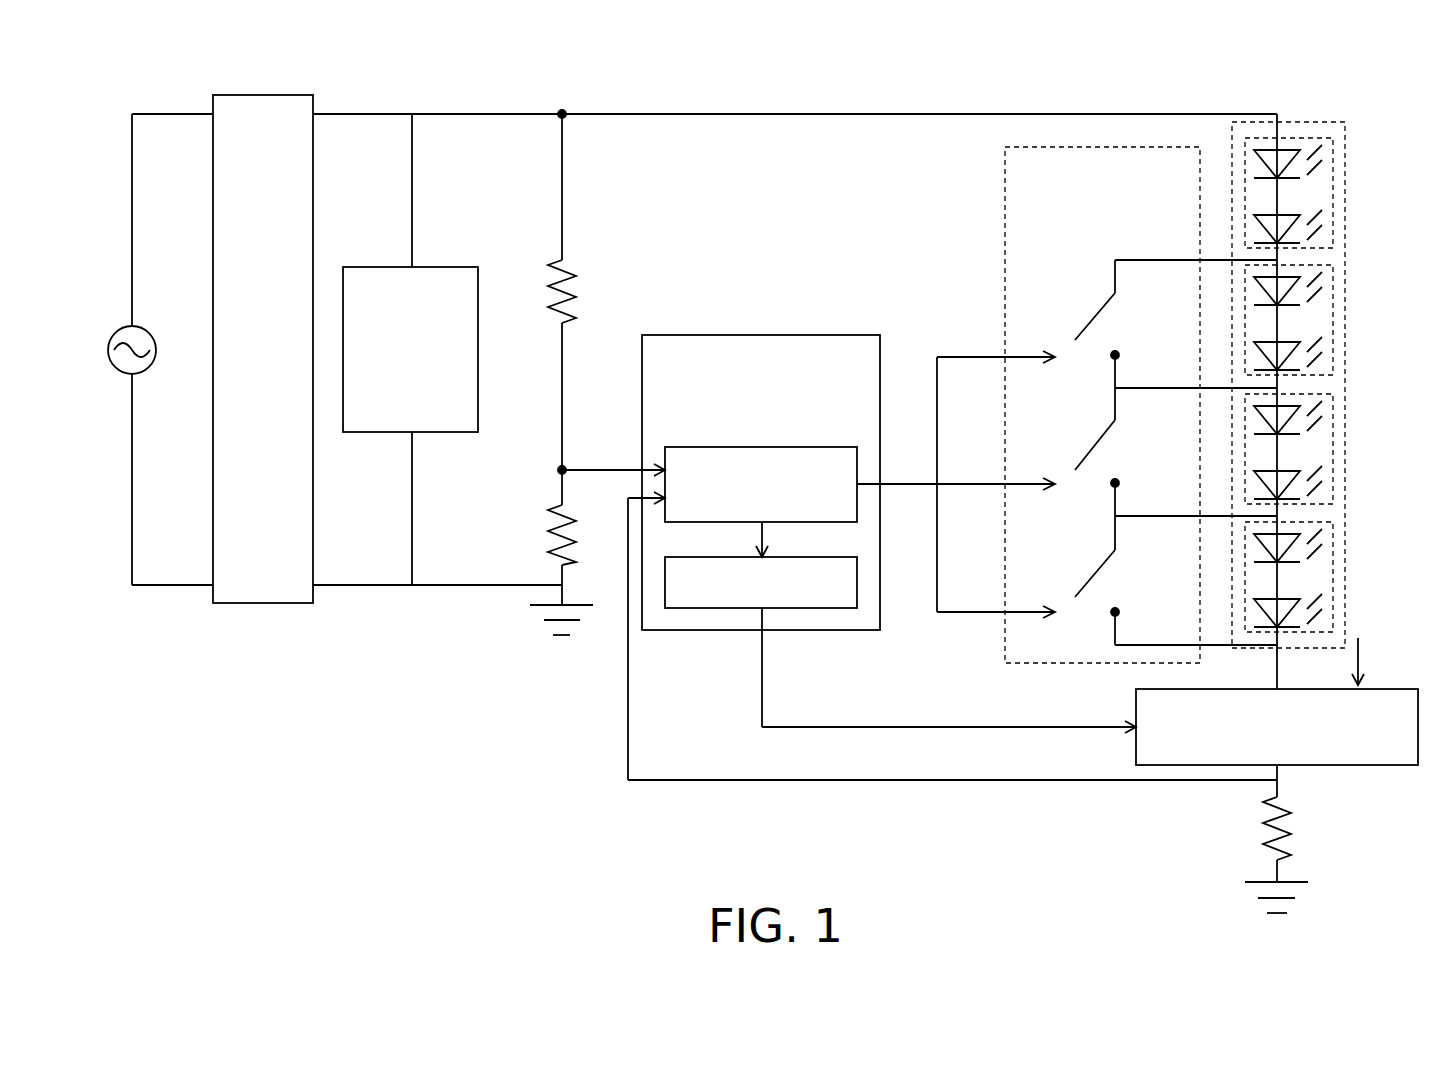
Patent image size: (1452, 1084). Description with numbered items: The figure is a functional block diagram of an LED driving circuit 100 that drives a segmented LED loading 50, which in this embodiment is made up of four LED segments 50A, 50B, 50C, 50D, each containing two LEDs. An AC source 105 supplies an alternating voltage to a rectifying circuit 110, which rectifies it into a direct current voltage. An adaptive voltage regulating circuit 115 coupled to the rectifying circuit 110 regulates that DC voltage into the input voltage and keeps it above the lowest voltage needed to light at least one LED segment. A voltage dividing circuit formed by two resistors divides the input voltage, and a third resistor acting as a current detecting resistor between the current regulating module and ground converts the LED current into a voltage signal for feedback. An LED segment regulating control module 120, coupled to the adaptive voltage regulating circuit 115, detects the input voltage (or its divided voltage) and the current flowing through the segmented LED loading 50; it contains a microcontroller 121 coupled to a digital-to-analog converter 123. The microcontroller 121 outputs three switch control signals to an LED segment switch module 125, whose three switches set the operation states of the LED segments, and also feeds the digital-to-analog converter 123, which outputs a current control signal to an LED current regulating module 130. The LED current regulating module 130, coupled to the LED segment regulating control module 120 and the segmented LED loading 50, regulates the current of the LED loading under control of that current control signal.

The LED driving circuit 100 is at (333, 80).
The AC power source 105 is at (114, 367).
The rectifying circuit 110 is at (277, 277).
The adaptive voltage regulating circuit 115 is at (430, 423).
The LED segment regulating control module 120 is at (828, 433).
The microcontroller 121 is at (783, 513).
The digital-to-analog converter 123 is at (812, 595).
The LED segment switch module 125 is at (1057, 242).
The LED current regulating module 130 is at (1345, 753).
The segmented LED loading 50 is at (1347, 143).
The LED segment 50A is at (1333, 191).
The LED segment 50B is at (1333, 320).
The LED segment 50C is at (1333, 448).
The LED segment 50D is at (1333, 576).